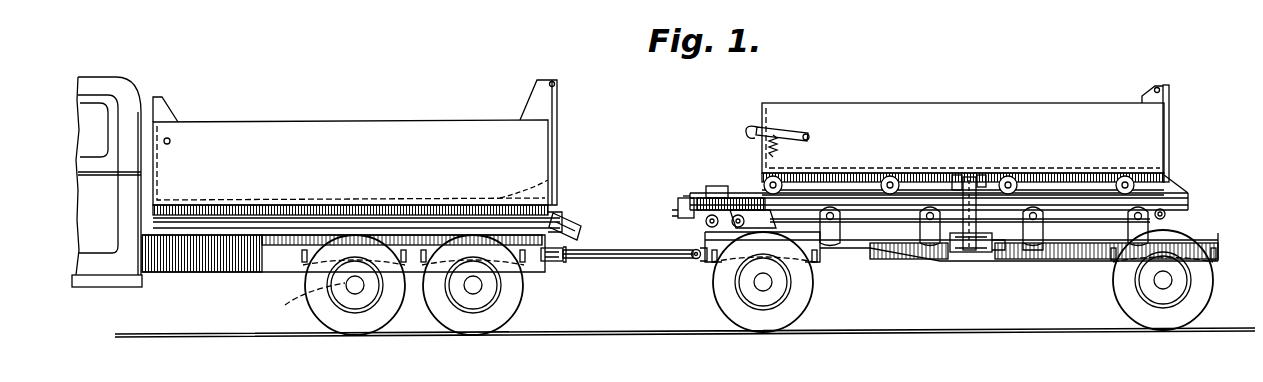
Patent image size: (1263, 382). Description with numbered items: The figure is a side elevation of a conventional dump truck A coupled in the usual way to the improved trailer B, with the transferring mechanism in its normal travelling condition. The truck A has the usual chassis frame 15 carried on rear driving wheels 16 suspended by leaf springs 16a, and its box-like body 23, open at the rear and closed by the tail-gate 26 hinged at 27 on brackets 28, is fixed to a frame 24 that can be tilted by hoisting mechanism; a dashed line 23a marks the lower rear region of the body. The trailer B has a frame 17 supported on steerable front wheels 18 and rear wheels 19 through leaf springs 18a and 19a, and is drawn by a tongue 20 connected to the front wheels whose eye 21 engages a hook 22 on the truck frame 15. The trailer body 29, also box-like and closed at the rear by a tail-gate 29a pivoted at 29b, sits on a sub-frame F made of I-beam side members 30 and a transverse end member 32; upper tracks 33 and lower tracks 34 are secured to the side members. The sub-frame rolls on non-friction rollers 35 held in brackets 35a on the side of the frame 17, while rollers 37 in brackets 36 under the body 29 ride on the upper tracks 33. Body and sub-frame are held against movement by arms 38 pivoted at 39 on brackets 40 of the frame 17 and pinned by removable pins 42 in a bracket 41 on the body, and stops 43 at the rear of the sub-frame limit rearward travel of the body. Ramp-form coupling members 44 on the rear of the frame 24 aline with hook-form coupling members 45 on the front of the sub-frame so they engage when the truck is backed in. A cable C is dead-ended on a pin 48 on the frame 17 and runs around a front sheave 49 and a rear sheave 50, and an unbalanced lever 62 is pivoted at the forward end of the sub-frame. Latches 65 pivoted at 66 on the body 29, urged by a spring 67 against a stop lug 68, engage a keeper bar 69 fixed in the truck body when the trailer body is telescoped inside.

The dump truck A is at (336, 112).
The trailer B is at (972, 100).
The cable C is at (863, 250).
The sub-frame F is at (1200, 201).
The chassis frame 15 is at (230, 252).
The rear driving wheels 16 is at (445, 315).
The leaf springs 16a is at (301, 301).
The trailer frame 17 is at (900, 248).
The steerable front wheels 18 is at (769, 322).
The leaf springs 18a is at (730, 270).
The rear wheels 19 is at (1127, 303).
The leaf springs 19a is at (1210, 270).
The tongue 20 is at (652, 258).
The eye 21 is at (564, 259).
The hook 22 is at (551, 263).
The body 23 is at (392, 122).
The dump body rear edge 23a is at (545, 186).
The frame 24 is at (376, 226).
The tail-gate 26 is at (558, 137).
The hinge 27 is at (556, 83).
The brackets 28 is at (527, 104).
The trailer body 29 is at (1057, 108).
The tail-gate 29a is at (1169, 120).
The pivot 29b is at (1158, 86).
The I-beam side members 30 is at (847, 202).
The transverse end member 32 is at (686, 200).
The upper tracks 33 is at (912, 184).
The lower tracks 34 is at (1098, 197).
The non-friction rollers 35 is at (1045, 228).
The brackets 35a is at (1047, 250).
The brackets 36 is at (1073, 184).
The non-friction rollers 37 is at (1019, 188).
The arms 38 is at (1005, 250).
The pivot 39 is at (982, 262).
The brackets 40 is at (950, 262).
The bracket 41 is at (985, 178).
The removable pins 42 is at (956, 178).
The stops 43 is at (1178, 176).
The coupling members 44 is at (580, 228).
The complemental coupling members 45 is at (675, 223).
The pin 48 is at (763, 227).
The front sheave 49 is at (720, 225).
The rear sheave 50 is at (1185, 218).
The unbalanced lever 62 is at (716, 186).
The latches 65 is at (789, 132).
The pivot 66 is at (810, 134).
The spring 67 is at (778, 148).
The stop lug 68 is at (763, 142).
The keeper bar 69 is at (170, 138).